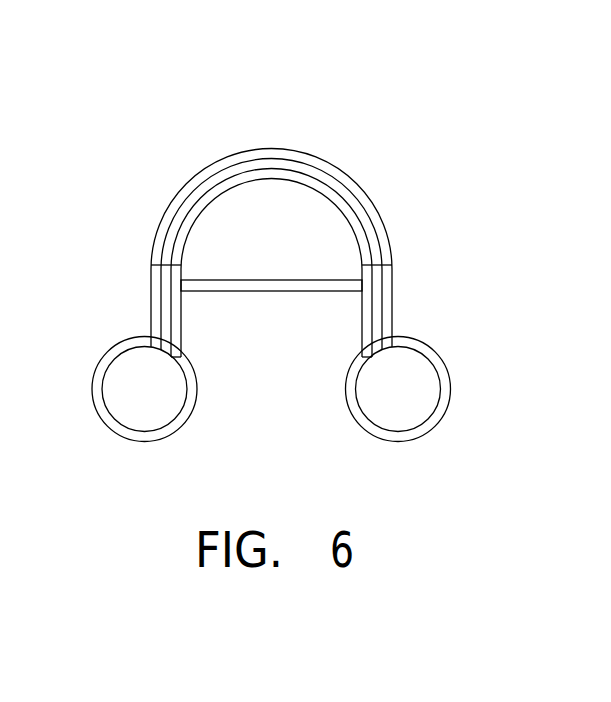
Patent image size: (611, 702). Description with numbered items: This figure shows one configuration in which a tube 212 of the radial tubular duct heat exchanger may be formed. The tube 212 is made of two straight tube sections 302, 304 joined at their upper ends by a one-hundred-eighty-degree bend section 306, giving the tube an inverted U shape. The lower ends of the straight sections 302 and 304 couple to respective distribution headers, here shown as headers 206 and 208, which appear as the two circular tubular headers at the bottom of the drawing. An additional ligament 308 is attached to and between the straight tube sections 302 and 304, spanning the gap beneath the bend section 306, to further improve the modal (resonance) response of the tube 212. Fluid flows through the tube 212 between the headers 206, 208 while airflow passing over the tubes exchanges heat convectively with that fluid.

The tube 212 is at (275, 279).
The 180° bend section 306 is at (275, 148).
The straight tube section 302 is at (150, 286).
The straight tube section 304 is at (393, 297).
The ligament 308 is at (240, 292).
The distribution header 206 is at (163, 438).
The distribution header 208 is at (418, 435).